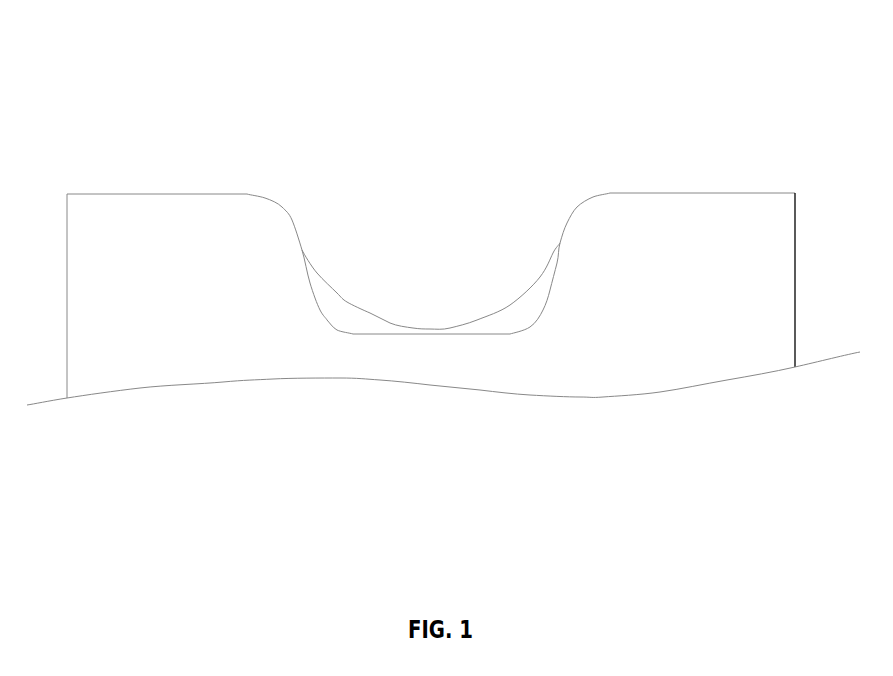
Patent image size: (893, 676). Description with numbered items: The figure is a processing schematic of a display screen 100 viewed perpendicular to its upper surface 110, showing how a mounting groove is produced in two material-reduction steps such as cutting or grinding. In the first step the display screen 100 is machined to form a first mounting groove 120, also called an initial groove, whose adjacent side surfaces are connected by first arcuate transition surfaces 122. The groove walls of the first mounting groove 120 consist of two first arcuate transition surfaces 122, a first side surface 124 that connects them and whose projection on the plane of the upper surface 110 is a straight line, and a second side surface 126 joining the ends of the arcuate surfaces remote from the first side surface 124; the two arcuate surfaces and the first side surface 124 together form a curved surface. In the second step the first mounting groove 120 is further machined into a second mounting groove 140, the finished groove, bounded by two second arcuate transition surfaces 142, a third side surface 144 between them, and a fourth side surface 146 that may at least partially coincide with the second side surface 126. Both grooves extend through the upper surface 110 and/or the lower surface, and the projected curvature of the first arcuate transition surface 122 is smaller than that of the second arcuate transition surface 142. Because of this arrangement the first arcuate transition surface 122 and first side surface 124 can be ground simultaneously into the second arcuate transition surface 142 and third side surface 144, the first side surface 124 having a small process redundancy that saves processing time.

The display screen 100 is at (115, 49).
The upper surface 110 is at (603, 323).
The first mounting groove 120 is at (442, 296).
The first arcuate transition surface 122 is at (347, 302).
The first side surface 124 is at (428, 328).
The second side surface 126 is at (292, 220).
The second mounting groove 140 is at (519, 291).
The second arcuate transition surface 142 is at (327, 318).
The third side surface 144 is at (445, 334).
The fourth side surface 146 is at (342, 144).